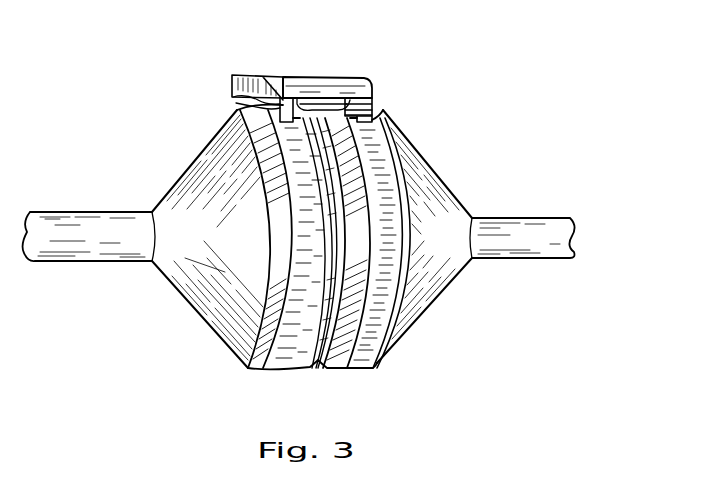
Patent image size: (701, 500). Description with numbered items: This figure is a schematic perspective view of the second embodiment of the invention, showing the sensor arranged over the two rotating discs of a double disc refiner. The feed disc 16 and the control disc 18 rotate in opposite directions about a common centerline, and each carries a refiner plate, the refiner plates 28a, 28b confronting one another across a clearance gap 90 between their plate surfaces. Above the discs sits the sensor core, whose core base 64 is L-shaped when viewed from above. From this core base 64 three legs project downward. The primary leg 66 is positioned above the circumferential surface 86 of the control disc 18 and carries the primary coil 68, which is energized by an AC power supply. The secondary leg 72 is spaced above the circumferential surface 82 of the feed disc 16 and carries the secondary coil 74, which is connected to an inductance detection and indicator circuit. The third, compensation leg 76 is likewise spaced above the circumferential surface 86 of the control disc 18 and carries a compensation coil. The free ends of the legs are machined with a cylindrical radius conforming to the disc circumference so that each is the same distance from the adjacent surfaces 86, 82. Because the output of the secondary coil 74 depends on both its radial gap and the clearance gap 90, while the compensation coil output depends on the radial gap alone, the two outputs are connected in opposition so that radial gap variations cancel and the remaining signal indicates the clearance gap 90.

The feed disc 16 is at (417, 167).
The control disc 18 is at (205, 152).
The refiner plate 28a is at (343, 277).
The refiner plate 28b is at (327, 307).
The core base 64 is at (325, 82).
The primary leg 66 is at (263, 73).
The primary coil 68 is at (287, 100).
The secondary leg 72 is at (242, 99).
The secondary coil 74 is at (372, 100).
The compensation leg 76 is at (233, 77).
The circumferential surface 82 is at (388, 207).
The circumferential surface 86 is at (297, 207).
The clearance gap 90 is at (330, 160).